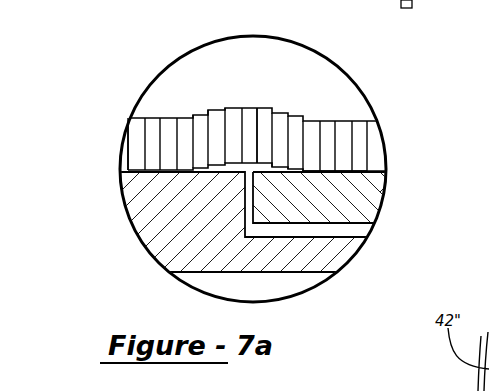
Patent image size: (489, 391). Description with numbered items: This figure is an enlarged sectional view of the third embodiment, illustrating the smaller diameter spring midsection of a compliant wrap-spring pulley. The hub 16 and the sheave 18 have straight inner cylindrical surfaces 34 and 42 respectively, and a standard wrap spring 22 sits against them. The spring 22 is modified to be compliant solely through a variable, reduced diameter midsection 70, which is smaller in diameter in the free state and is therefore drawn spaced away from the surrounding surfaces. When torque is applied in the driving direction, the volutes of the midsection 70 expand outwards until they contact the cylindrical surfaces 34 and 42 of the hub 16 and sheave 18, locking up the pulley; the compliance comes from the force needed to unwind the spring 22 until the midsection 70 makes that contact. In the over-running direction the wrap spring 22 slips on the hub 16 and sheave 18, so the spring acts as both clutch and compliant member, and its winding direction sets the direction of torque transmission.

The hub 16 is at (353, 203).
The sheave 18 is at (167, 236).
The wrap spring 22 is at (342, 123).
The inner cylindrical surface 34 is at (352, 170).
The inner cylindrical surface 42 is at (158, 167).
The reduced diameter midsection 70 is at (262, 115).